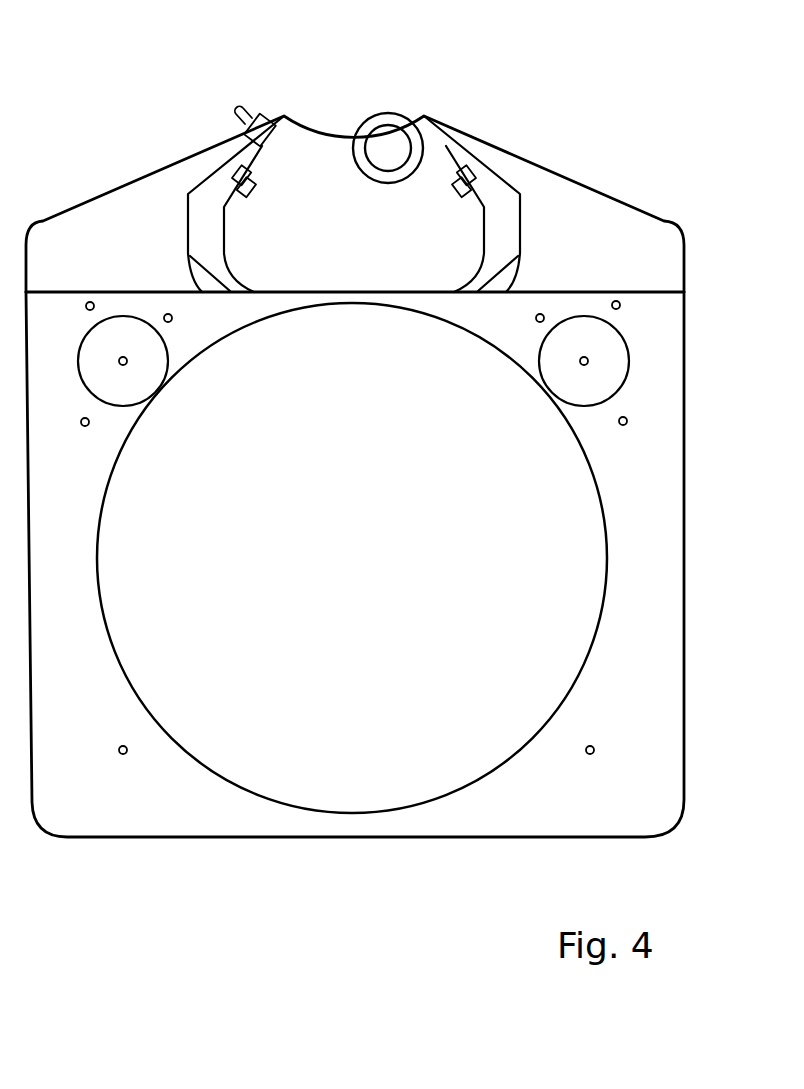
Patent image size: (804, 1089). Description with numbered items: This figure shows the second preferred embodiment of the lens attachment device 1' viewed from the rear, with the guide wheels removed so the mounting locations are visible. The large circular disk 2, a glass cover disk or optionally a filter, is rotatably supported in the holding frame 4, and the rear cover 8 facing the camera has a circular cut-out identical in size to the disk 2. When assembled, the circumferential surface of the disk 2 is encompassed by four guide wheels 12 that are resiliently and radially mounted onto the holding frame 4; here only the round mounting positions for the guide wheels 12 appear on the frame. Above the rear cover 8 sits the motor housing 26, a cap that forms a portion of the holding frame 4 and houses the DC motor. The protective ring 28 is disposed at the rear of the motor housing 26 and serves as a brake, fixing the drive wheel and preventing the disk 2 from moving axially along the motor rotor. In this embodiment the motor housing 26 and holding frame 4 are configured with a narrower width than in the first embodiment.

The lens attachment device 1' is at (355, 152).
The disk 2 is at (350, 790).
The holding frame 4 is at (418, 837).
The rear cover 8 is at (463, 815).
The guide wheel 12 is at (618, 362).
The motor housing 26 is at (344, 110).
The protective ring 28 is at (393, 120).